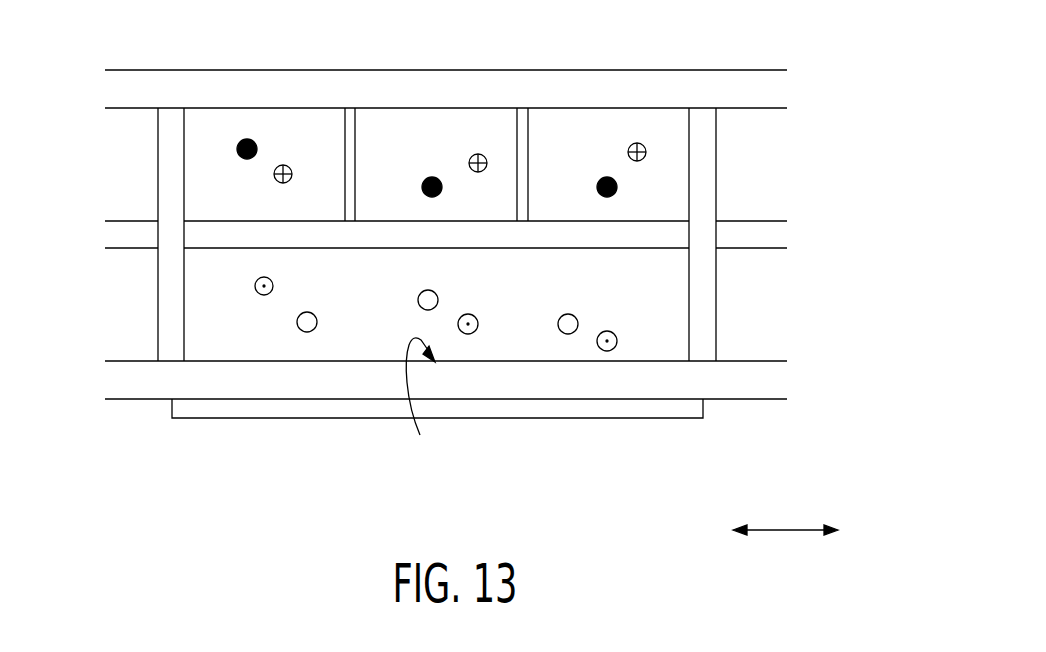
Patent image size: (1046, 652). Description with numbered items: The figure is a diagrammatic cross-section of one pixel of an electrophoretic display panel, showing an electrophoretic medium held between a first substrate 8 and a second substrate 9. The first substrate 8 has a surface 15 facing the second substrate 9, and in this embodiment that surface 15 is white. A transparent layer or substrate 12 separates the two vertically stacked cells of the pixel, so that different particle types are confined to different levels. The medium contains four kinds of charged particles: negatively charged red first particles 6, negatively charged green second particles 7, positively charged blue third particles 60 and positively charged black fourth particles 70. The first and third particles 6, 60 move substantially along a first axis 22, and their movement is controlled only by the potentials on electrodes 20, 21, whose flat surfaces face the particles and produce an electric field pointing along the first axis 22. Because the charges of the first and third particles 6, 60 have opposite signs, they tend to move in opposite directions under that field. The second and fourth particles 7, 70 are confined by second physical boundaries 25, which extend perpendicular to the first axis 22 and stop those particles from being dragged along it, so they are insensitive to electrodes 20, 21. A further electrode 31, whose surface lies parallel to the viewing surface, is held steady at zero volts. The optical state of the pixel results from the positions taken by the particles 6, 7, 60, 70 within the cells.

The first charged particles 6 is at (307, 332).
The second charged particles 7 is at (245, 138).
The first substrate 8 is at (120, 380).
The second substrate 9 is at (127, 87).
The transparent layer or substrate 12 is at (120, 232).
The surface of the first substrate 15 is at (420, 402).
The electrode 20 is at (170, 340).
The electrode 21 is at (704, 346).
The first axis 22 is at (785, 519).
The second physical boundaries 25 is at (349, 117).
The electrode 31 is at (663, 407).
The third charged particles 60 is at (468, 334).
The fourth charged particles 70 is at (285, 165).